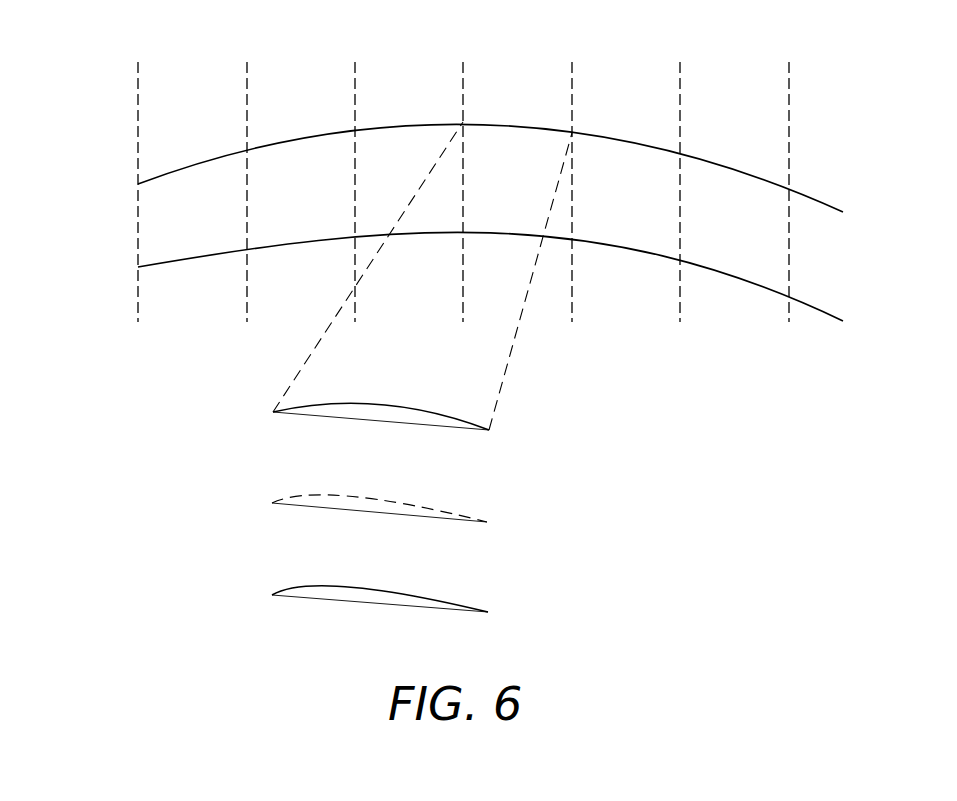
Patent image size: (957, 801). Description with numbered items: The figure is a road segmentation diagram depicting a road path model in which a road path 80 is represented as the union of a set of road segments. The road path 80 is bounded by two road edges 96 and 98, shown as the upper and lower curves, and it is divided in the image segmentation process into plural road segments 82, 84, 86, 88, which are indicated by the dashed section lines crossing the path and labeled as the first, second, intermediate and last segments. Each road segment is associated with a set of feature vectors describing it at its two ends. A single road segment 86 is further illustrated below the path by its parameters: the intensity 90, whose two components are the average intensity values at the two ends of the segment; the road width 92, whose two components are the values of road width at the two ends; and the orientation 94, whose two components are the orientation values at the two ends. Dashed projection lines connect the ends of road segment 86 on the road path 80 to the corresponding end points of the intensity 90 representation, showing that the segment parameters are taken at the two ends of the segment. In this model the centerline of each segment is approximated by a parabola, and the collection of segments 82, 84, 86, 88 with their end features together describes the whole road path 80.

The road path 80 is at (467, 222).
The road segment 82 is at (193, 70).
The road segment 84 is at (302, 70).
The road segment 86 is at (517, 70).
The road segment 88 is at (737, 70).
The intensity parameter 90 is at (533, 437).
The road width parameter 92 is at (533, 528).
The orientation parameter 94 is at (530, 618).
The road edge 96 is at (138, 185).
The road edge 98 is at (138, 267).